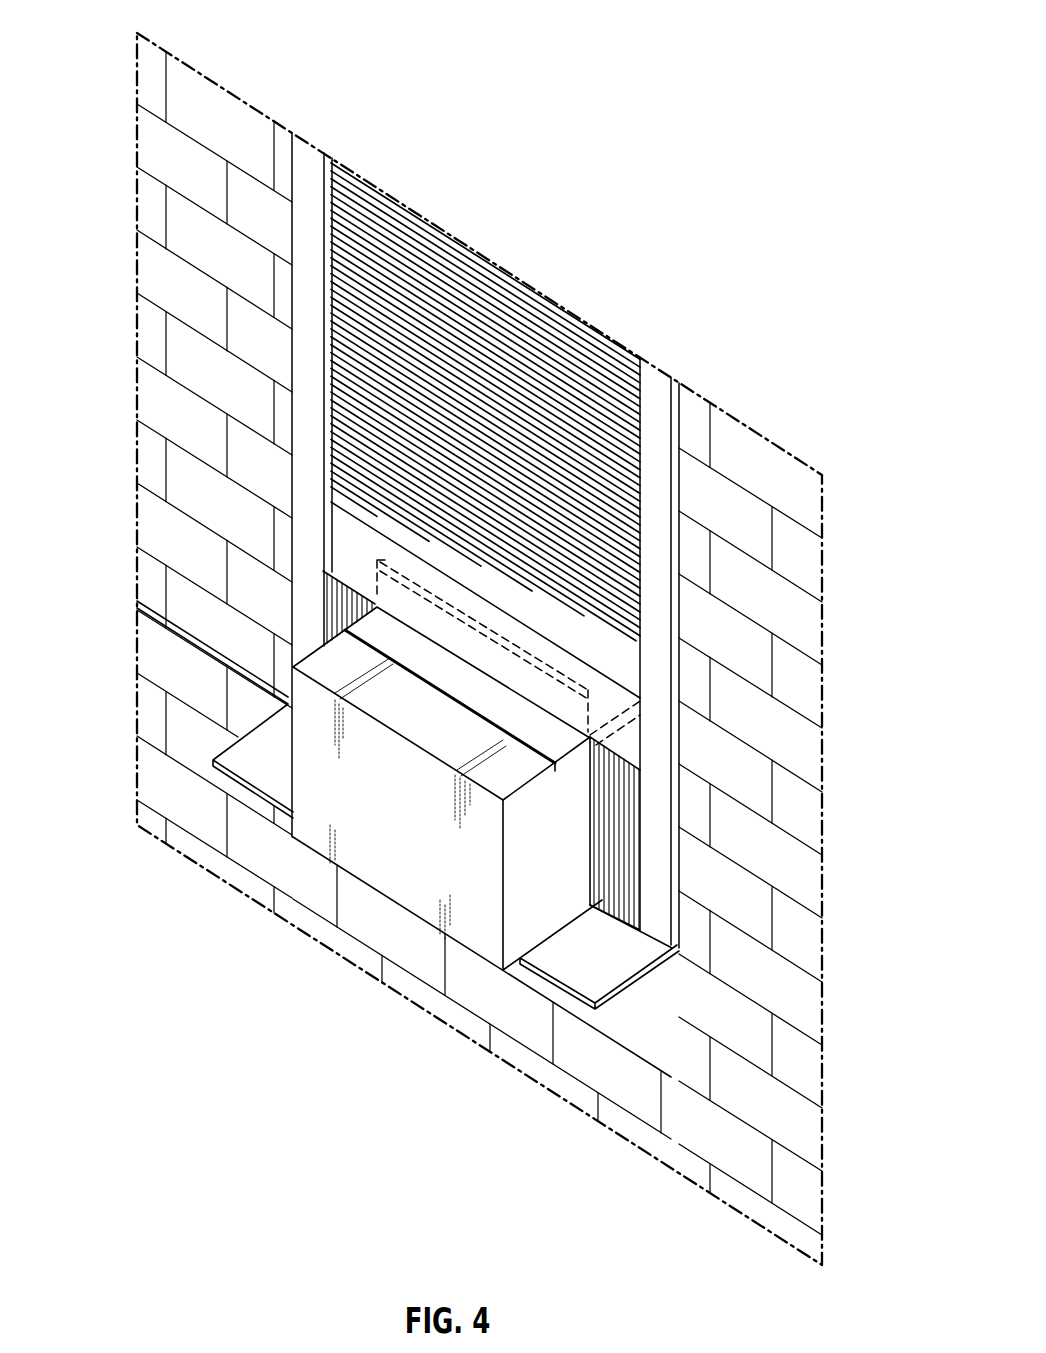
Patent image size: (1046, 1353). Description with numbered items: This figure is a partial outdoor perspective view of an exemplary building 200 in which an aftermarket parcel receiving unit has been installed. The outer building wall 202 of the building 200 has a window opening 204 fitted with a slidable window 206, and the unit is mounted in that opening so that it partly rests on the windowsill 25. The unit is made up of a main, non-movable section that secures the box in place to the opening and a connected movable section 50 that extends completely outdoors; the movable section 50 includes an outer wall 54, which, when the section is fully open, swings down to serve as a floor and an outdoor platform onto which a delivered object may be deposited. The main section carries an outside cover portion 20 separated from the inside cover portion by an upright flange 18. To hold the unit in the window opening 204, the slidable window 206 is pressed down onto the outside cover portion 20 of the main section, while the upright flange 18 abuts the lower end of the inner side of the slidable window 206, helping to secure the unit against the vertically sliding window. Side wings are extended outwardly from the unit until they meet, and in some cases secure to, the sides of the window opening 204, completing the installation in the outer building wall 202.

The building 200 is at (767, 42).
The outer building wall 202 is at (166, 218).
The window opening 204 is at (300, 398).
The slidable window 206 is at (488, 342).
The upright flange 18 is at (390, 580).
The movable section 50 is at (287, 733).
The outside cover portion 20 is at (507, 717).
The outer wall 54 is at (362, 852).
The windowsill 25 is at (573, 965).